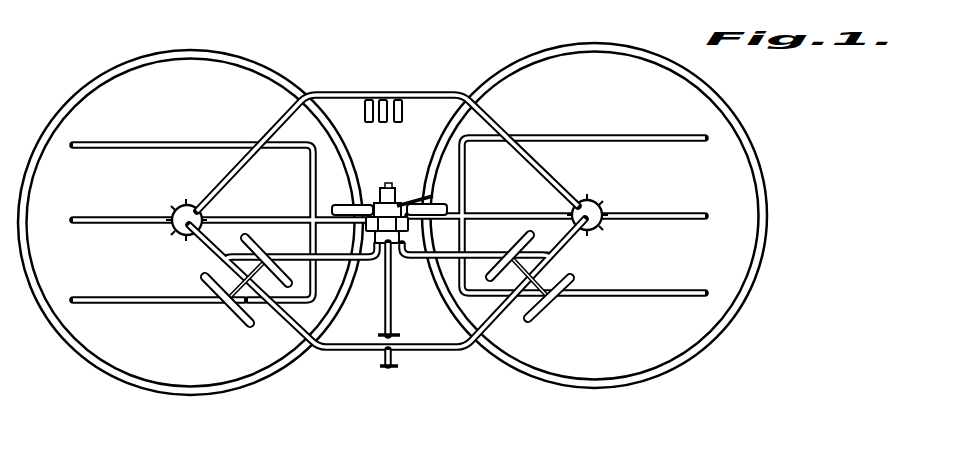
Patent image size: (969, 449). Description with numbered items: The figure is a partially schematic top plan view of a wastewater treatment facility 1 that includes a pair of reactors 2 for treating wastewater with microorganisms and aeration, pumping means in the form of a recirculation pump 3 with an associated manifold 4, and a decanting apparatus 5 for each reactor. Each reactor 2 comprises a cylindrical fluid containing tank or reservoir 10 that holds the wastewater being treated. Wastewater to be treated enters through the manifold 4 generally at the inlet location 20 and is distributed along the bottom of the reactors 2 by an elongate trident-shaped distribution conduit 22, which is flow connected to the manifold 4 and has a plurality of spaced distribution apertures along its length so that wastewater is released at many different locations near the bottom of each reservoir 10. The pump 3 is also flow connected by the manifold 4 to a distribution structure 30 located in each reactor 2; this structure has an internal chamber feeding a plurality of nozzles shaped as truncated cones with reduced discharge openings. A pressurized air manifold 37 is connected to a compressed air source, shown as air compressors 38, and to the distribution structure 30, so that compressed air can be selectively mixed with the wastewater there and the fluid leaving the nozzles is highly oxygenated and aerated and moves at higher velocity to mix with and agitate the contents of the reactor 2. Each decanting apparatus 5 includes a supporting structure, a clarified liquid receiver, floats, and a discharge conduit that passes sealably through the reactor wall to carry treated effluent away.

The wastewater treatment facility 1 is at (329, 377).
The reactor 2 is at (66, 101).
The recirculation pump 3 is at (413, 205).
The manifold 4 is at (307, 239).
The decanting apparatus 5 is at (214, 312).
The reservoir 10 is at (104, 364).
The wastewater inlet location 20 is at (399, 174).
The distribution conduit 22 is at (100, 301).
The distribution structure 30 is at (172, 212).
The pressurized air manifold 37 is at (425, 92).
The air compressor 38 is at (402, 124).